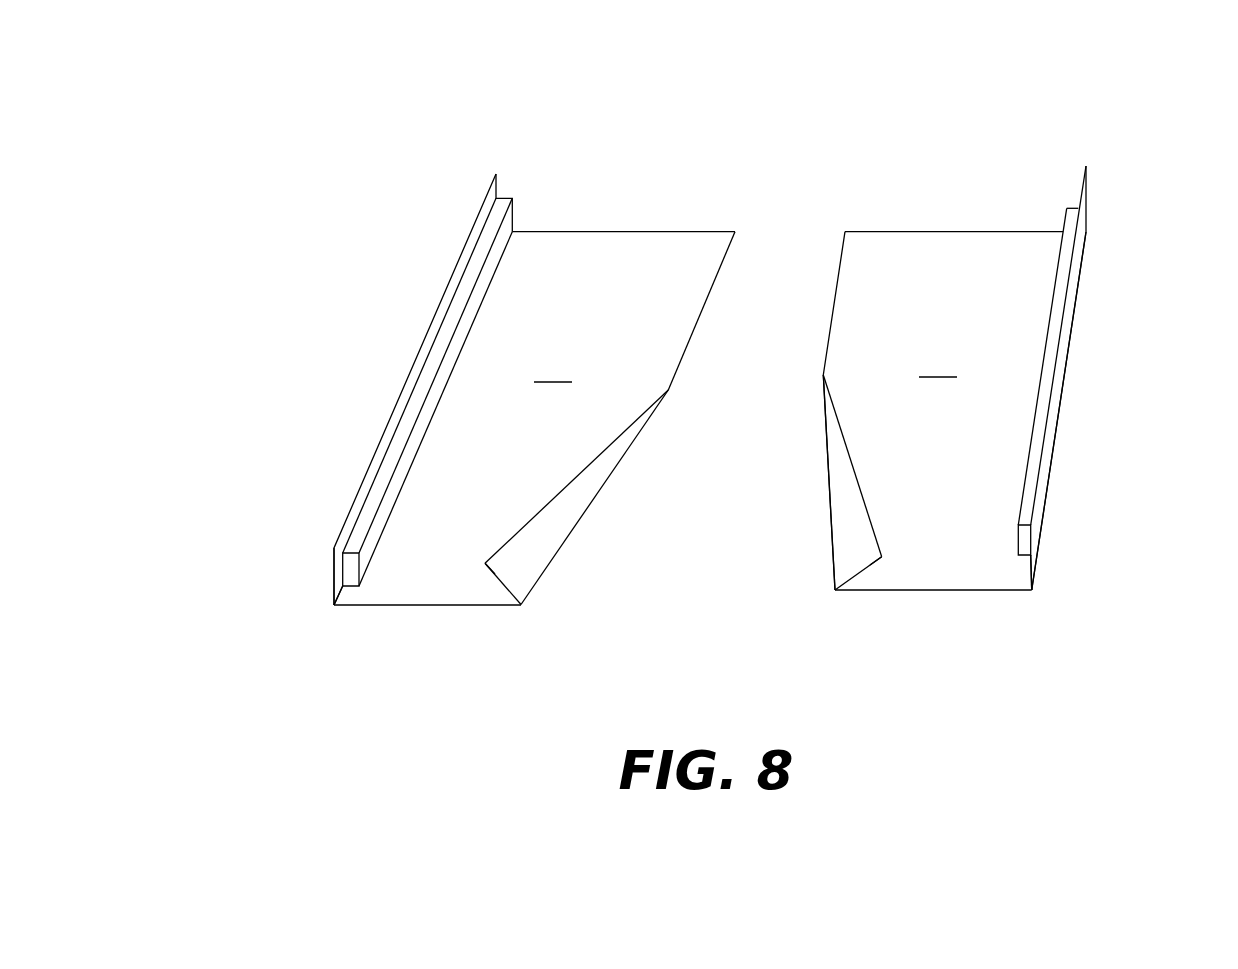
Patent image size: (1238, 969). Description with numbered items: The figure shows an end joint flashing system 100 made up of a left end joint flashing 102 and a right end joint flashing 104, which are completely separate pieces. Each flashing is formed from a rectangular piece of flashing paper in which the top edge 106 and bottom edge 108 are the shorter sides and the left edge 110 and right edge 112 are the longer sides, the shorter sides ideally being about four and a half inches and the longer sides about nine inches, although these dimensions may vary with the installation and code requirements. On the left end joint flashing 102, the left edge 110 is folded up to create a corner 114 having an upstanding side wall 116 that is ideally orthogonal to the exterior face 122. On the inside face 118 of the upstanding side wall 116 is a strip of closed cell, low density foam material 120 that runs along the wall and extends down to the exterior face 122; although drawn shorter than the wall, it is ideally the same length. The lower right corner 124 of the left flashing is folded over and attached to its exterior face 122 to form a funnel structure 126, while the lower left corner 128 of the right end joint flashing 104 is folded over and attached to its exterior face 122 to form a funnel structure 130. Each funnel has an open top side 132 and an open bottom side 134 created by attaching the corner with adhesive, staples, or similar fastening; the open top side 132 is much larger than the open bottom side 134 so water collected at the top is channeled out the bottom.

The end joint flashing system 100 is at (775, 132).
The left end joint flashing 102 is at (486, 148).
The right end joint flashing 104 is at (1100, 176).
The top edge 106 is at (623, 231).
The bottom edge 108 is at (428, 606).
The left edge 110 is at (452, 272).
The right edge 112 is at (727, 258).
The corner 114 is at (330, 600).
The upstanding side wall 116 is at (327, 575).
The inside face 118 is at (367, 485).
The foam strip 120 is at (513, 222).
The exterior face 122 is at (745, 368).
The lower right corner 124 is at (479, 556).
The funnel structure 126 is at (572, 505).
The lower left corner 128 is at (886, 568).
The funnel structure 130 is at (838, 523).
The open top side 132 is at (575, 473).
The open bottom side 134 is at (497, 590).